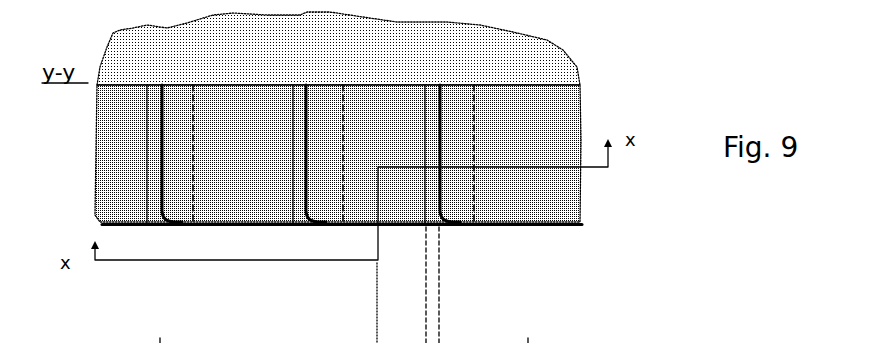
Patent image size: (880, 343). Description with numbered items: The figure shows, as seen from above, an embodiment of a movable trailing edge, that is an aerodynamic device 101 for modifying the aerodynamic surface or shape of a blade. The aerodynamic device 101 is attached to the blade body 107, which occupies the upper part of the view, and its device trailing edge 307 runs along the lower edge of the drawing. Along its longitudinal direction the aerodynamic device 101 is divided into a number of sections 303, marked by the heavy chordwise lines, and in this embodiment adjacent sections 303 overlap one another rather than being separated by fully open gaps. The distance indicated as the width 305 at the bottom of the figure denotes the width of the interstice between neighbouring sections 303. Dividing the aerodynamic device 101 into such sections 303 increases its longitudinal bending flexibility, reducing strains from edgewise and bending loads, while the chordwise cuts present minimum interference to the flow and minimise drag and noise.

The blade body 107 is at (478, 70).
The aerodynamic device 101 is at (540, 193).
The sections 303 is at (343, 200).
The device trailing edge 307 is at (363, 260).
The width 305 is at (393, 315).